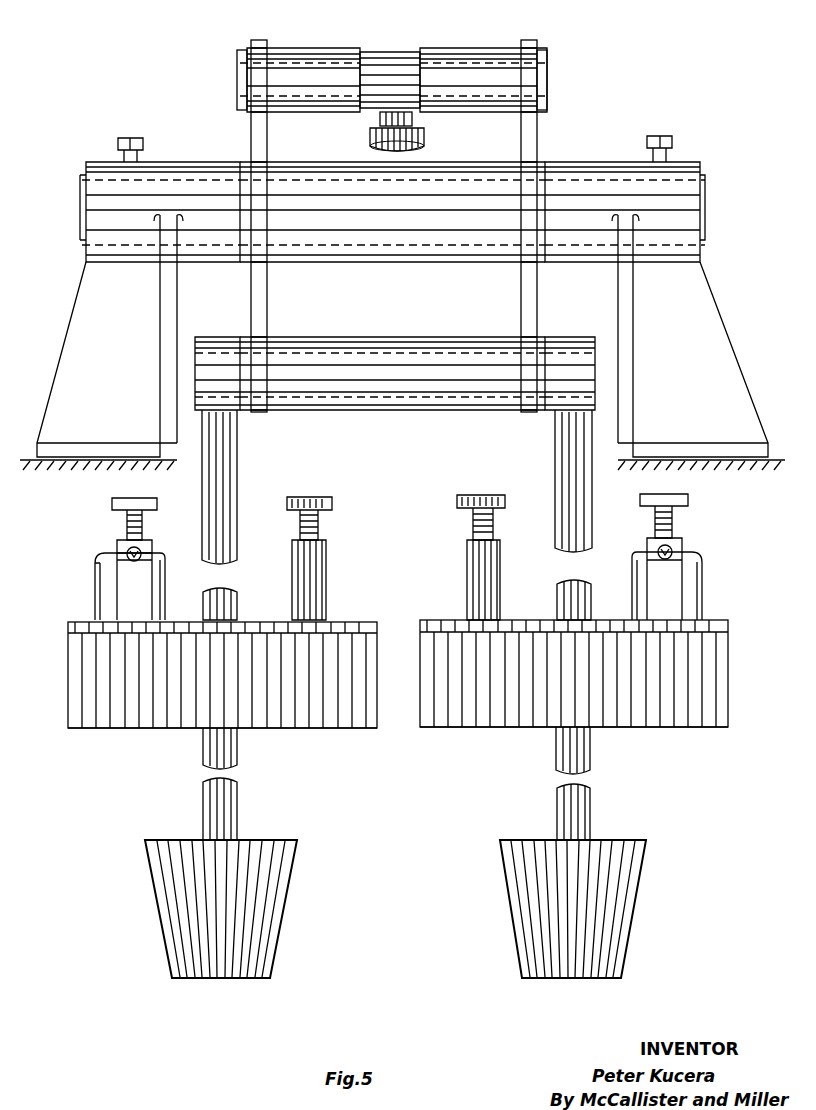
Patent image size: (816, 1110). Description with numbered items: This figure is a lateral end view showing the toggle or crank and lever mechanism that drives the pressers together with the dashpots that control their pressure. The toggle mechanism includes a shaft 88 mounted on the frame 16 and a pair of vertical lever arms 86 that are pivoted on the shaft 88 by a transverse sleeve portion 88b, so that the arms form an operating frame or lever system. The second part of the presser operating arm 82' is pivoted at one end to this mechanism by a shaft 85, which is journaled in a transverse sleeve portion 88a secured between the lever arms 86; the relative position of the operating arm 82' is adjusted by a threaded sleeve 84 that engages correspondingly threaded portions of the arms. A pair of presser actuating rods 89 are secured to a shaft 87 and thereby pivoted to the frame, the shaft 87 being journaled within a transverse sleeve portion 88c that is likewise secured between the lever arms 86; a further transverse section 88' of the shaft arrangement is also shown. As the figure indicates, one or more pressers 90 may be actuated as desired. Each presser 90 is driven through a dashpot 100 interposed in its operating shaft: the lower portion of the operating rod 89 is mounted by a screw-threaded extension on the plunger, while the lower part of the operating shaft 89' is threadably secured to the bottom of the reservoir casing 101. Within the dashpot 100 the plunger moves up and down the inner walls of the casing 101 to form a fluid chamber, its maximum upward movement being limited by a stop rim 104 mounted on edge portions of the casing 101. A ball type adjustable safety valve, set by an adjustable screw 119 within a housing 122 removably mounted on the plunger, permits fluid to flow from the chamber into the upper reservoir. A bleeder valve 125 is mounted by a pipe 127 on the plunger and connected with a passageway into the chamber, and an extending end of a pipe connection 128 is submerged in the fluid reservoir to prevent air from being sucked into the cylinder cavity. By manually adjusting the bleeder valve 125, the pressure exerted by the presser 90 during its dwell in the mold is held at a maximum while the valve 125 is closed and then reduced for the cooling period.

The frame 16 is at (113, 427).
The operating arm second part 82' is at (390, 67).
The threaded sleeve 84 is at (426, 139).
The shaft 85 is at (483, 62).
The lever arms 86 is at (252, 136).
The shaft 87 is at (445, 345).
The shaft 88 is at (410, 199).
The cross bar section 88' is at (392, 258).
The transverse sleeve portion 88a is at (341, 55).
The transverse sleeve portion 88b is at (343, 163).
The transverse sleeve portion 88c is at (345, 337).
The presser actuating rods 89 is at (397, 515).
The lower part of operating shaft 89' is at (396, 783).
The presser 90 is at (285, 919).
The dashpot 100 is at (116, 757).
The reservoir casing 101 is at (433, 718).
The stop rim 104 is at (445, 627).
The adjustable screw 119 is at (127, 528).
The housing 122 is at (150, 554).
The bleeder valve 125 is at (134, 562).
The pipe 127 is at (163, 606).
The pipe connection 128 is at (95, 583).